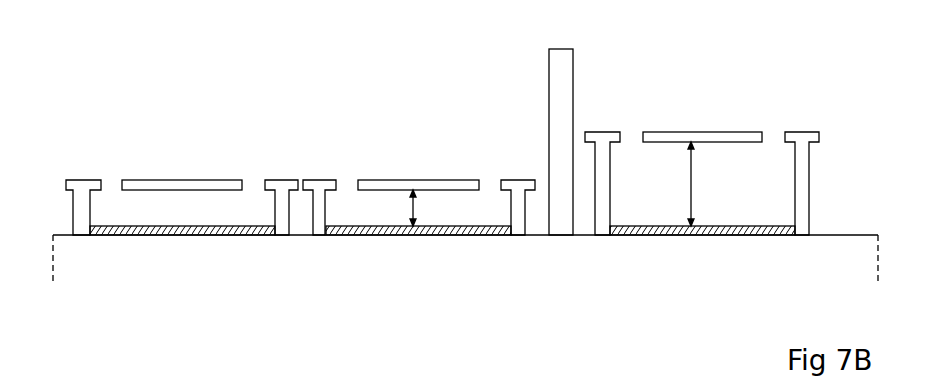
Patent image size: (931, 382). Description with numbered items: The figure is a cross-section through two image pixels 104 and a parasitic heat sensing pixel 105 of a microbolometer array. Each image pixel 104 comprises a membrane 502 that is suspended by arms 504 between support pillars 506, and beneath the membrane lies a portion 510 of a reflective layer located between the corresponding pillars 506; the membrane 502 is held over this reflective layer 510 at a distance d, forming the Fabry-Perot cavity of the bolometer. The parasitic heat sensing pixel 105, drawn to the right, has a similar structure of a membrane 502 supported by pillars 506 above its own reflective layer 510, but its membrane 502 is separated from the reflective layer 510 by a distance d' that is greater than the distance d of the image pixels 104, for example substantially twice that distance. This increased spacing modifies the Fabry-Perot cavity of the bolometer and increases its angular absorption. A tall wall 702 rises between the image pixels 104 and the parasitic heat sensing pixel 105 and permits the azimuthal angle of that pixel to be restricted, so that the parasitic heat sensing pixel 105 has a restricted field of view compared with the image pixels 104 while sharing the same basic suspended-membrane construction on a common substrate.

The image pixel 104 is at (163, 105).
The parasitic heat sensing pixel 105 is at (730, 84).
The membrane 502 is at (182, 183).
The arms 504 is at (320, 184).
The support pillars 506 is at (84, 183).
The portion of a reflective layer 510 is at (139, 231).
The wall 702 is at (561, 72).
The distance d is at (437, 208).
The distance d' is at (719, 184).